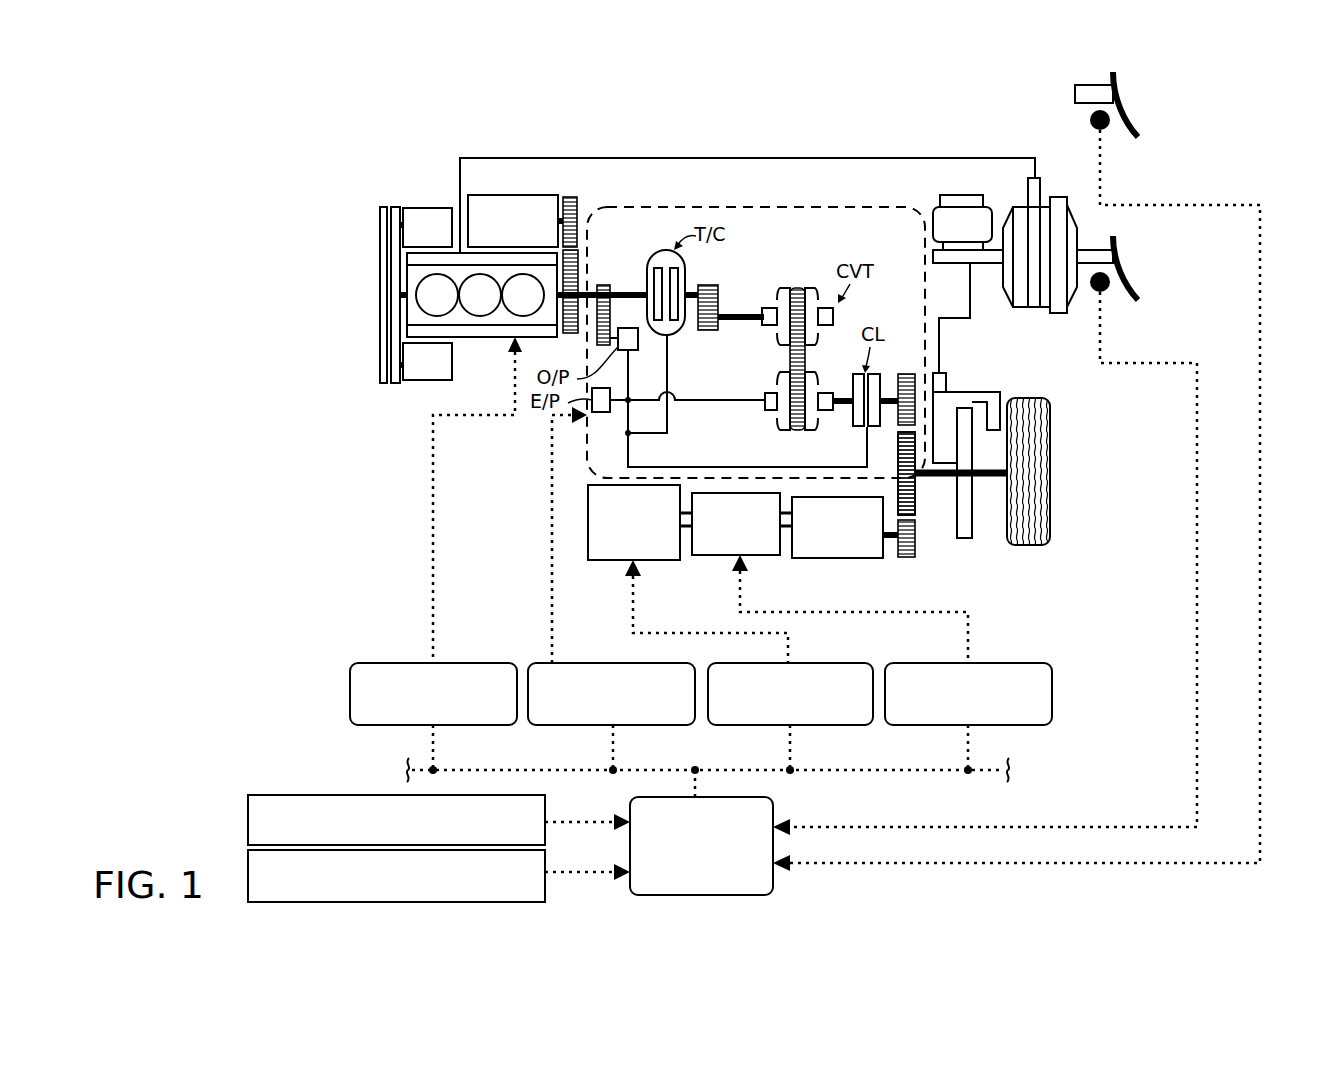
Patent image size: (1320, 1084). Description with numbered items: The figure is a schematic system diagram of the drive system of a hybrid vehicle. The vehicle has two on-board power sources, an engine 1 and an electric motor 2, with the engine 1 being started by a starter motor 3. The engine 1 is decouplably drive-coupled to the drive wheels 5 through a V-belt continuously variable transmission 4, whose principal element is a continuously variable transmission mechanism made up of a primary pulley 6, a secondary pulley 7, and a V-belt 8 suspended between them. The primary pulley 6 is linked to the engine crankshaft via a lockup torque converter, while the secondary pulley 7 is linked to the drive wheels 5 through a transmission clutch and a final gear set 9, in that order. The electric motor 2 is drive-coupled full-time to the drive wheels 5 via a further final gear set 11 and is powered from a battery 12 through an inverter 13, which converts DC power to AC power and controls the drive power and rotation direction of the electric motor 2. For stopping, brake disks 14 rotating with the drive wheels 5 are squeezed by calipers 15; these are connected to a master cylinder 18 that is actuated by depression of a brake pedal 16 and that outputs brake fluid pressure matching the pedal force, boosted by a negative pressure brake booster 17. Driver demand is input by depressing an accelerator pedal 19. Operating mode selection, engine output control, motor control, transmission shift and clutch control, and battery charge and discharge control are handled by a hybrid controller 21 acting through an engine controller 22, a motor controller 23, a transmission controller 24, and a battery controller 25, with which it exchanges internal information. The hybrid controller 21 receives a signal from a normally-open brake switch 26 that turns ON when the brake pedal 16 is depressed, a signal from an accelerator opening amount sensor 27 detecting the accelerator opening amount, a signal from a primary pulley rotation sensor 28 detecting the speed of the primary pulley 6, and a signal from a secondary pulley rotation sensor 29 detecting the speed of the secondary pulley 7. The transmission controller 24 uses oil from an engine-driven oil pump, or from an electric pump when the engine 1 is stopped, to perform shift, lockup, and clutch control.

The engine 1 is at (480, 340).
The electric motor 2 is at (866, 558).
The starter motor 3 is at (513, 195).
The V-belt continuously variable transmission 4 is at (842, 207).
The drive wheels 5 is at (1050, 405).
The primary pulley 6 is at (775, 300).
The secondary pulley 7 is at (785, 426).
The V-belt 8 is at (792, 351).
The final gear set 9 is at (898, 463).
The final gear set 11 is at (915, 533).
The battery 12 is at (598, 560).
The inverter 13 is at (715, 555).
The brake disks 14 is at (972, 522).
The calipers 15 is at (985, 392).
The brake pedal 16 is at (1140, 291).
The negative pressure brake booster 17 is at (1040, 307).
The master cylinder 18 is at (988, 266).
The accelerator pedal 19 is at (1140, 115).
The hybrid controller 21 is at (773, 813).
The engine controller 22 is at (497, 663).
The motor controller 23 is at (1029, 663).
The transmission controller 24 is at (599, 663).
The battery controller 25 is at (841, 663).
The brake switch 26 is at (1105, 292).
The accelerator opening amount sensor 27 is at (1108, 128).
The primary pulley rotation sensor 28 is at (248, 818).
The secondary pulley rotation sensor 29 is at (248, 870).